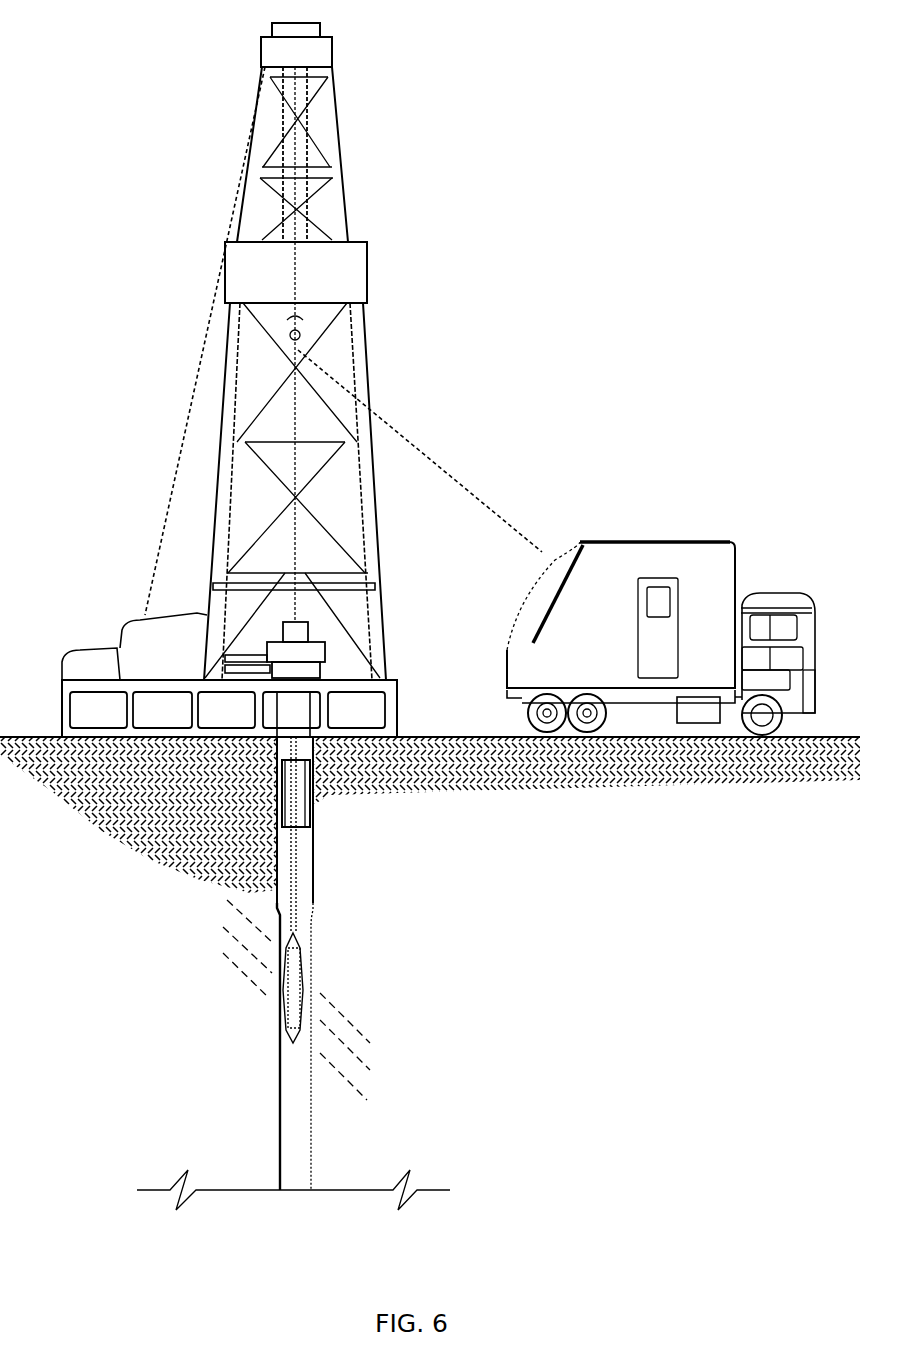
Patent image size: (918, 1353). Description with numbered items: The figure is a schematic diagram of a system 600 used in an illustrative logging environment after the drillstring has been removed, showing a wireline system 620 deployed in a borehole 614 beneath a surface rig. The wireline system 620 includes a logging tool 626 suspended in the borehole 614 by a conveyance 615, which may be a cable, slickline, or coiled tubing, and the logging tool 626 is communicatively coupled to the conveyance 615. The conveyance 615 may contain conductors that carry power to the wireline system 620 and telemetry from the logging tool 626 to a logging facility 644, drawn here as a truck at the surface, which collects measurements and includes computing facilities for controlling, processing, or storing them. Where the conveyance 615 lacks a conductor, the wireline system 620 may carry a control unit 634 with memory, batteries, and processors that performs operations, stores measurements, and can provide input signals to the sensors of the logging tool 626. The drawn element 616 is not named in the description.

The system 600 is at (545, 278).
The logging facility 644 is at (657, 540).
The control unit 634 is at (312, 625).
The conveyance 615 is at (317, 817).
The drill string 616 is at (310, 877).
The wireline system 620 is at (313, 968).
The logging tool 626 is at (277, 990).
The borehole 614 is at (277, 1092).